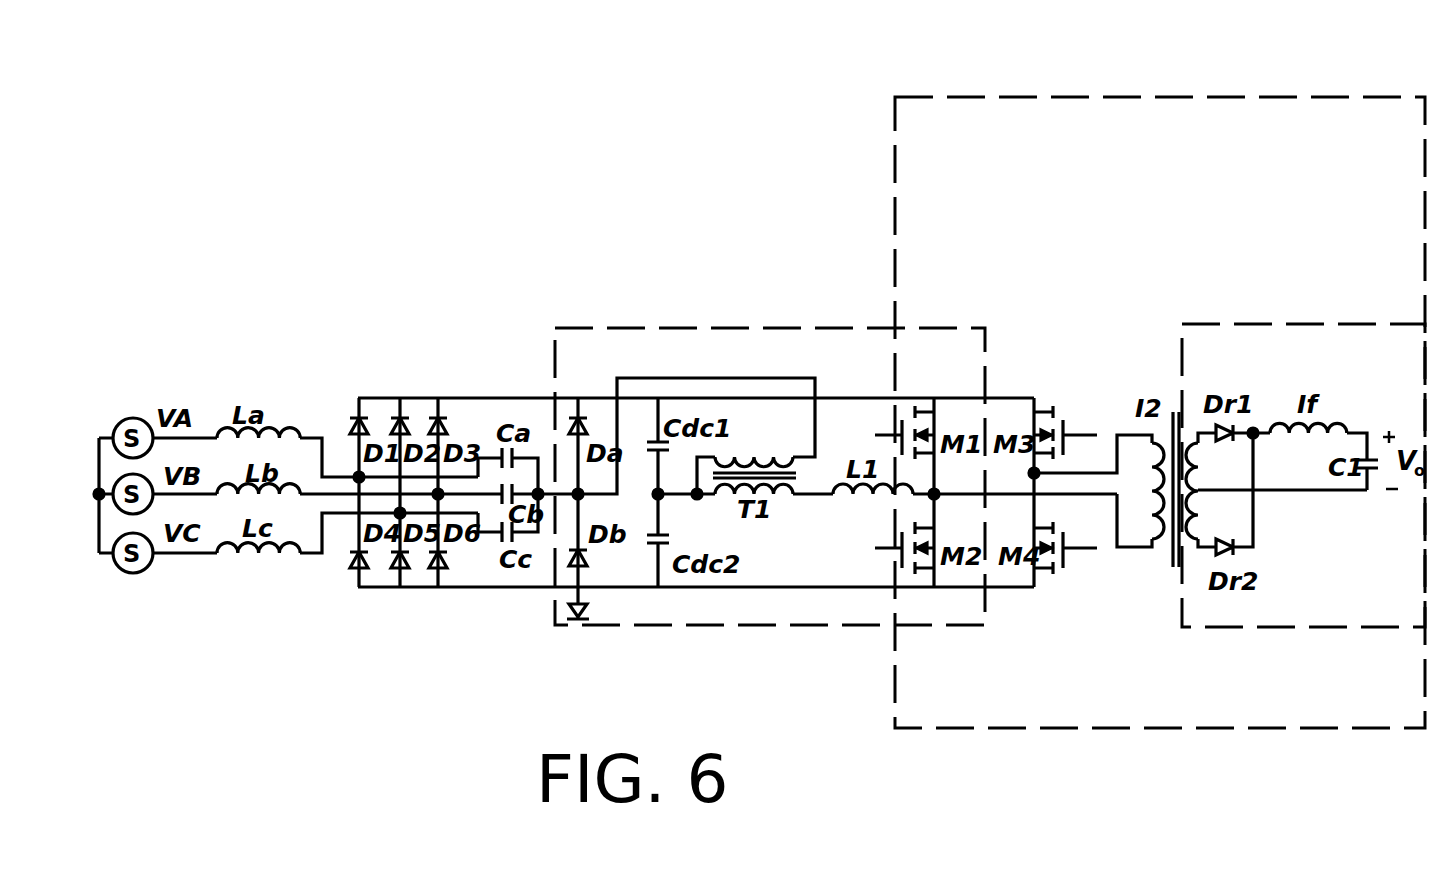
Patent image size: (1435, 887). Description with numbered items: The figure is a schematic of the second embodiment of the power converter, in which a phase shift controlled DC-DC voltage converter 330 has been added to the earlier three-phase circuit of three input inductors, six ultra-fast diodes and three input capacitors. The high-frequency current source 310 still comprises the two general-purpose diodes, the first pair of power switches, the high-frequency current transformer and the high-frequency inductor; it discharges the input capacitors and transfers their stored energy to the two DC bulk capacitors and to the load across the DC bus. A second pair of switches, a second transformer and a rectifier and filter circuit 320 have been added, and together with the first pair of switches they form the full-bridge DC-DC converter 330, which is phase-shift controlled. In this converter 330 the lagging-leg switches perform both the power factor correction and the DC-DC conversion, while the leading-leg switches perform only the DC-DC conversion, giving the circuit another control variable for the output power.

The high-frequency current source 310 is at (755, 328).
The rectifier and filter circuit 320 is at (1222, 324).
The full-bridge DC-DC converter 330 is at (1259, 97).